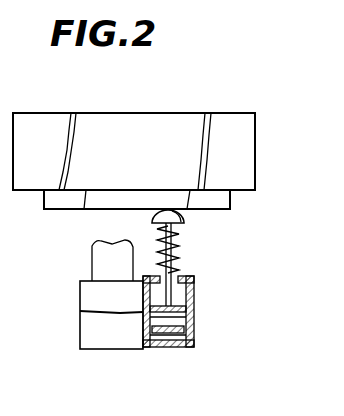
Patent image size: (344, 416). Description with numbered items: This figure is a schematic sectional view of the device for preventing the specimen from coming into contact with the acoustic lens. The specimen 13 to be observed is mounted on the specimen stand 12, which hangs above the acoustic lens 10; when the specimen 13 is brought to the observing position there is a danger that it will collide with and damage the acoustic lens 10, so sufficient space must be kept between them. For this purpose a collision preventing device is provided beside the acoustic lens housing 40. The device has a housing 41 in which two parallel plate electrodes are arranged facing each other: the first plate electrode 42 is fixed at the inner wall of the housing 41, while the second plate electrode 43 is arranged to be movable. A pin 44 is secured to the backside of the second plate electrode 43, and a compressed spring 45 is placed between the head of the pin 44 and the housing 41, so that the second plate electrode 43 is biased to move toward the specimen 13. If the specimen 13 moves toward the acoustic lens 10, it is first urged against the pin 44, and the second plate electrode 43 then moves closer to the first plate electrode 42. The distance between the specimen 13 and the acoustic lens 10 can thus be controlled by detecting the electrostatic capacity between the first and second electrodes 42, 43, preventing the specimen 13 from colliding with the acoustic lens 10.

The acoustic lens 10 is at (100, 265).
The specimen stand 12 is at (246, 150).
The specimen 13 is at (222, 203).
The acoustic lens housing 40 is at (86, 330).
The housing 41 is at (195, 291).
The first plate electrode 42 is at (182, 348).
The second plate electrode 43 is at (180, 317).
The pin 44 is at (184, 219).
The compressed spring 45 is at (177, 252).